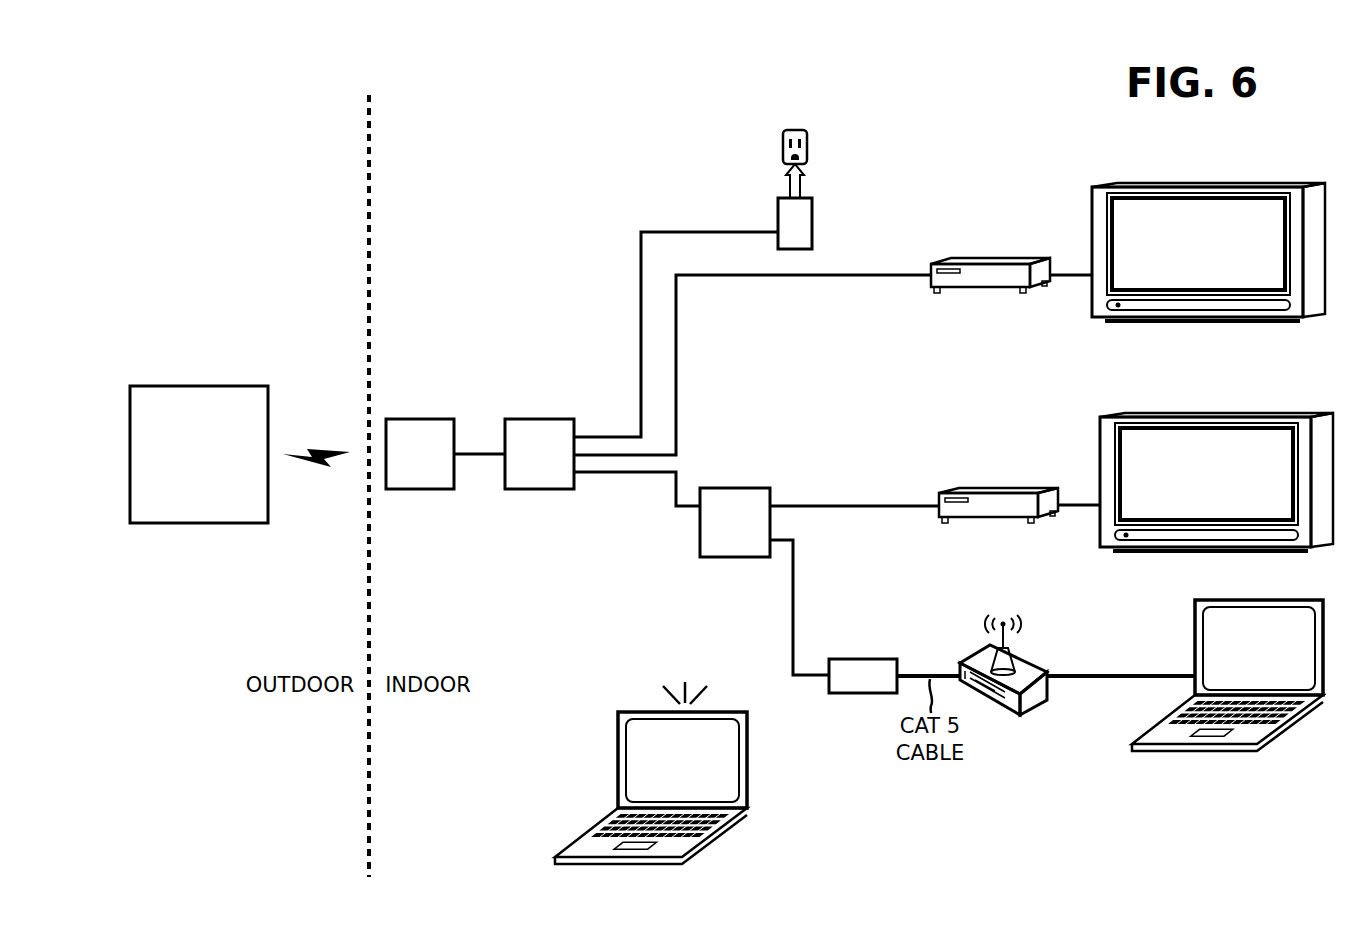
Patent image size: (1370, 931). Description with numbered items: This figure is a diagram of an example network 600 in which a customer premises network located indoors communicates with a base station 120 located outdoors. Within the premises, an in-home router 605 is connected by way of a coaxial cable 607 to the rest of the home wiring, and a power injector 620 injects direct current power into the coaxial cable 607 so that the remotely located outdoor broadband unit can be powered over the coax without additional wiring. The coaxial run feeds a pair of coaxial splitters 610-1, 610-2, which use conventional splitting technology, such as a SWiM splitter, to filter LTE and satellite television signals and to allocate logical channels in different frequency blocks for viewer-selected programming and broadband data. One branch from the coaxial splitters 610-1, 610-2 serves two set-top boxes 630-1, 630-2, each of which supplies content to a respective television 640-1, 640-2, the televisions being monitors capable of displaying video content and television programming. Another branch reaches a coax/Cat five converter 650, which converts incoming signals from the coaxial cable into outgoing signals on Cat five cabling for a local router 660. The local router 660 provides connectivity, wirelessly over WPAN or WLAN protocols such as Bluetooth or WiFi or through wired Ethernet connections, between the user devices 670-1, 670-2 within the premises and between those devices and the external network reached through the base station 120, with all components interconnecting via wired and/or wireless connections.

The network 600 is at (233, 32).
The base station 120 is at (199, 454).
The in-home router 605 is at (434, 419).
The coaxial cable 607 is at (487, 456).
The coaxial splitter 610-1 is at (551, 419).
The coaxial splitter 610-2 is at (749, 488).
The power injector 620 is at (778, 214).
The set-top box 630-1 is at (961, 261).
The set-top box 630-2 is at (971, 491).
The television 640-1 is at (1258, 187).
The television 640-2 is at (1263, 417).
The coax/Cat 5 converter 650 is at (880, 659).
The local router 660 is at (1021, 716).
The user device 670-1 is at (1195, 641).
The user device 670-2 is at (726, 831).